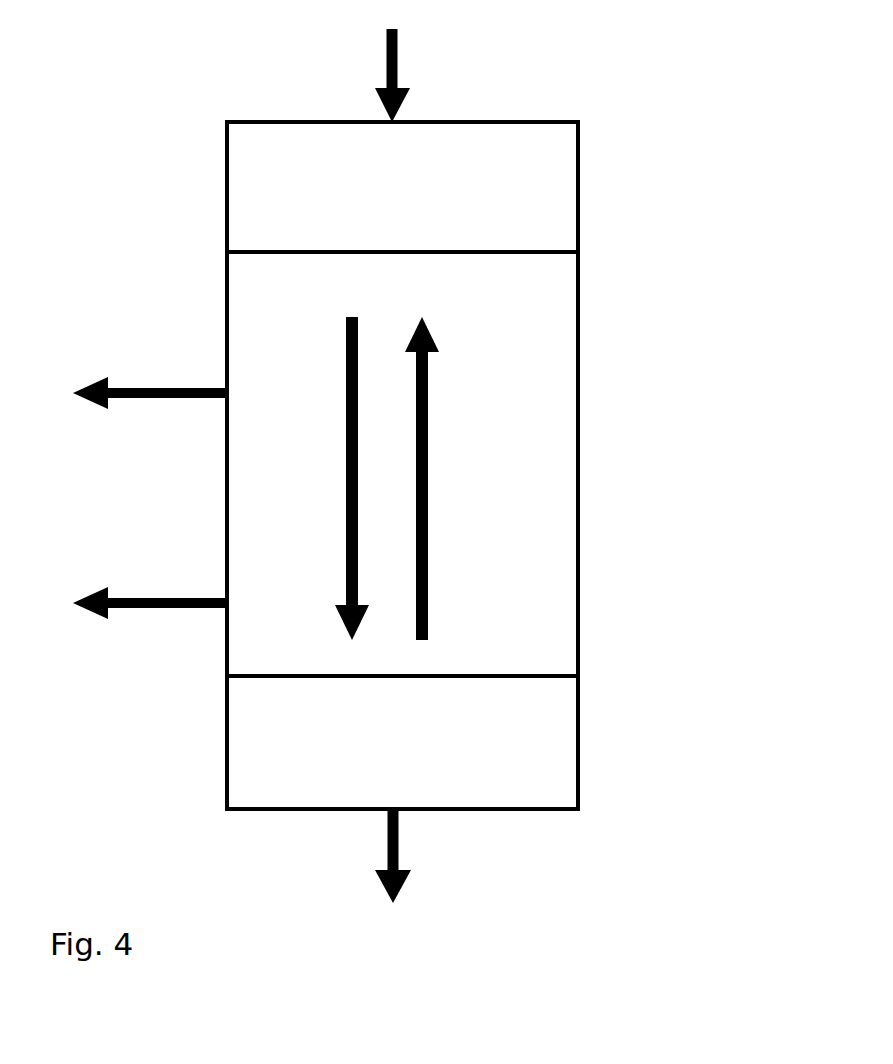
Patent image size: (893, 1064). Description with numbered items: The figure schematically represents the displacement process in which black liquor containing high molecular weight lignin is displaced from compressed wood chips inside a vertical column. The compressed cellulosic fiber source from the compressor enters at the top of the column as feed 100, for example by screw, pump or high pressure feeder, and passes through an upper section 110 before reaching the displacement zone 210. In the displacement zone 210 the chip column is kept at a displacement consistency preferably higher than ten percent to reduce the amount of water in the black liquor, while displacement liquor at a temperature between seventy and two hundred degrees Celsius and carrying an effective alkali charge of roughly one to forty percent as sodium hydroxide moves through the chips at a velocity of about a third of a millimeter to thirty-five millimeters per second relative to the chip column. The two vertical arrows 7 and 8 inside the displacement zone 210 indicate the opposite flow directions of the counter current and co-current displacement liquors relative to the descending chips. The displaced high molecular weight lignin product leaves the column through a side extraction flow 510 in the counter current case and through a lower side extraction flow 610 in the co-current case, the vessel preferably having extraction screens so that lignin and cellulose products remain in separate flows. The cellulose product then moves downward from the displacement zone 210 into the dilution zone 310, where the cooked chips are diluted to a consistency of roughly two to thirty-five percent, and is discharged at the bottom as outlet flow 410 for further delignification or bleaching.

The feed stream inlet 100 is at (400, 65).
The upper section of column 110 is at (578, 187).
The displacement zone 210 is at (578, 308).
The dilution zone 310 is at (578, 739).
The bottom outlet stream 410 is at (398, 850).
The extraction flow 510 is at (157, 387).
The extraction flow 610 is at (168, 598).
The upward vapor flow 7 is at (428, 436).
The downward liquid flow 8 is at (358, 510).